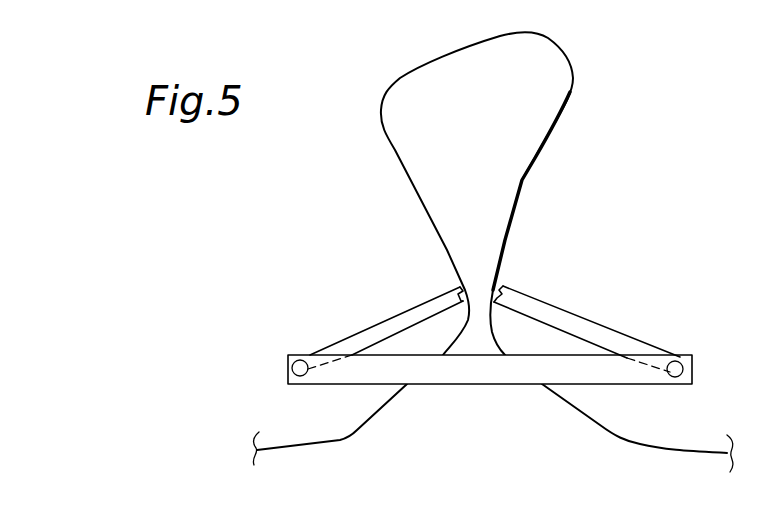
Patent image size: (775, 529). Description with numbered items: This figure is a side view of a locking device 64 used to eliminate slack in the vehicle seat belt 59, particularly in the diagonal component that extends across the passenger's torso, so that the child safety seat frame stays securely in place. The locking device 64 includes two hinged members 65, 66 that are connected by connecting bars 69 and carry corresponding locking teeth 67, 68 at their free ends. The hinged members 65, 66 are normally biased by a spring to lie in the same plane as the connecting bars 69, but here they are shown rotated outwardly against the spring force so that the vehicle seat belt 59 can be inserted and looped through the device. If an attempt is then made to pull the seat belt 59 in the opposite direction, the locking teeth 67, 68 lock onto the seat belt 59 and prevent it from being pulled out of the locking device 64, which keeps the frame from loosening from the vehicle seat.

The vehicle seat belt 59 is at (533, 167).
The locking device 64 is at (531, 342).
The hinged member 65 is at (592, 320).
The hinged member 66 is at (372, 323).
The locking teeth 67 is at (489, 286).
The locking teeth 68 is at (463, 290).
The connecting bars 69 is at (477, 385).